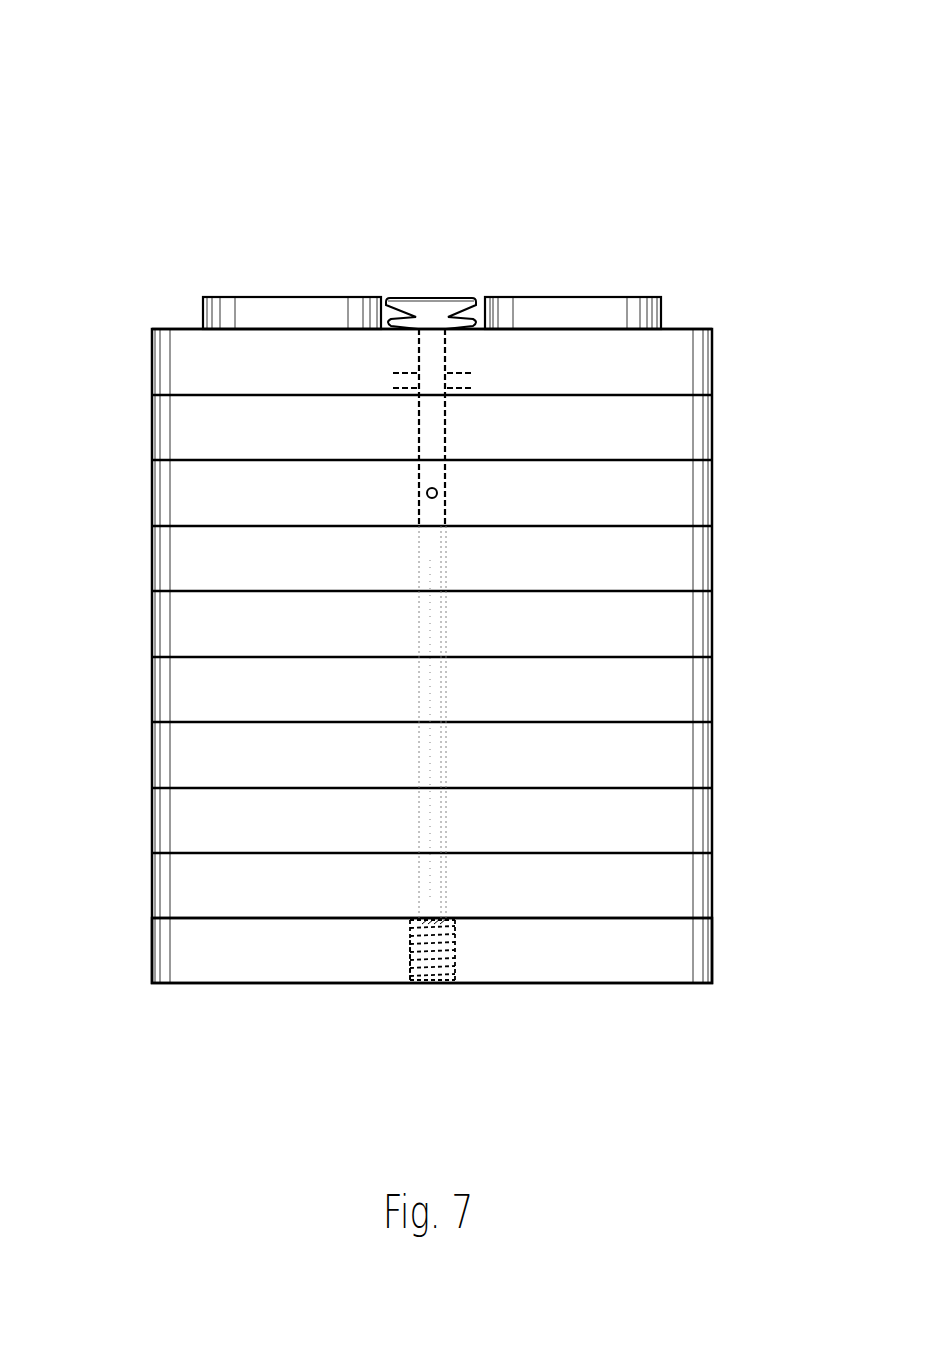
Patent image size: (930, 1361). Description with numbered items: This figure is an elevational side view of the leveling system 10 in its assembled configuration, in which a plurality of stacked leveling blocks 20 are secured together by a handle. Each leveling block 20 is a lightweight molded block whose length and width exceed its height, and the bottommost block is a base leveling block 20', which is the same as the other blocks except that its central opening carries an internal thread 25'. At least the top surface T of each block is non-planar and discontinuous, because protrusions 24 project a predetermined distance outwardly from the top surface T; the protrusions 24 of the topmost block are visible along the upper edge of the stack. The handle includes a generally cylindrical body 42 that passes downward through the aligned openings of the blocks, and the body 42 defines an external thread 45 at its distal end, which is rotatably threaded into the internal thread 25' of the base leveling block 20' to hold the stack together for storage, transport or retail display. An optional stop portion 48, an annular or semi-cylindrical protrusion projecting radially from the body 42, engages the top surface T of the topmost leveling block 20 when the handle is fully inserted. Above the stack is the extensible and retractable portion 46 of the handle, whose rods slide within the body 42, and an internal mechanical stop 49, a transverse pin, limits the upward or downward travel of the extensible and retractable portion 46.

The leveling system 10 is at (62, 70).
The leveling block 20 is at (486, 656).
The base leveling block 20' is at (384, 955).
The protrusion 24 is at (268, 308).
The top surface T is at (683, 328).
The extensible and retractable portion 46 is at (435, 310).
The stop portion 48 is at (393, 381).
The internal mechanical stop 49 is at (427, 493).
The cylindrical body 42 is at (430, 747).
The external thread 45 is at (457, 982).
The internal thread 25' is at (382, 1000).